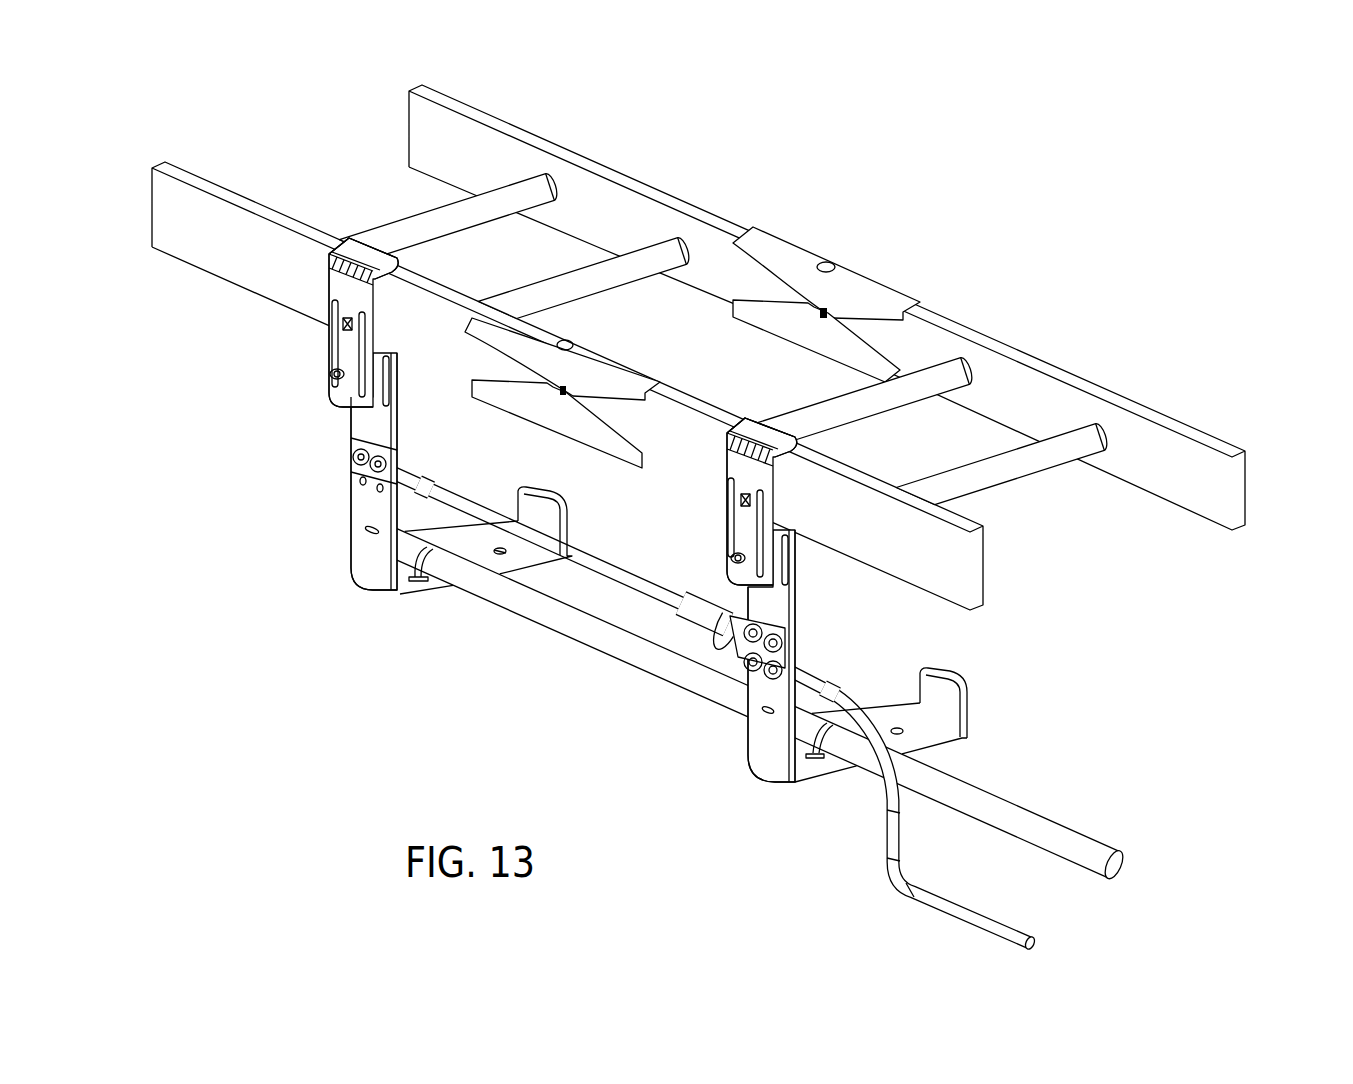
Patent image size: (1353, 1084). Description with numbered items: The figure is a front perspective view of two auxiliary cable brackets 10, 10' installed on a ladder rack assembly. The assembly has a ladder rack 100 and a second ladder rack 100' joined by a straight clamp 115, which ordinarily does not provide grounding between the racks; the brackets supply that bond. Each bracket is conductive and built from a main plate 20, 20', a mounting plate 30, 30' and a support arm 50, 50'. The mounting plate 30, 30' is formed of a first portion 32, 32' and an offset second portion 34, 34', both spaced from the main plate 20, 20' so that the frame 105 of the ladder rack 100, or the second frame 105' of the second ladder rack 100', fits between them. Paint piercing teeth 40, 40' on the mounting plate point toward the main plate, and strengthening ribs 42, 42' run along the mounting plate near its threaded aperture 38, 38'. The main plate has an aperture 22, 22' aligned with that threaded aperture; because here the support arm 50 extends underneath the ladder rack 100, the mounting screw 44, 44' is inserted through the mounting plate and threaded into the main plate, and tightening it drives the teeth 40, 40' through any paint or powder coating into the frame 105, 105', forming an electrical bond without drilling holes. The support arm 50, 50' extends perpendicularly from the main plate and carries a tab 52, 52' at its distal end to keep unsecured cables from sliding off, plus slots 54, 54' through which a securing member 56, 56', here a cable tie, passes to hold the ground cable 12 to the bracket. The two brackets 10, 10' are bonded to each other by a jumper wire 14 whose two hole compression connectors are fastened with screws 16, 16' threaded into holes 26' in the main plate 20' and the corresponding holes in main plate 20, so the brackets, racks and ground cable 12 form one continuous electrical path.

The second frame 105' is at (442, 217).
The frame 105 is at (940, 434).
The second ladder rack 100' is at (528, 205).
The ladder rack 100 is at (977, 388).
The straight clamp 115 is at (860, 270).
The second auxiliary cable bracket 10' is at (429, 414).
The auxiliary cable bracket 10 is at (832, 600).
The first portion 32' is at (326, 216).
The first portion 32 is at (772, 409).
The second portion 34' is at (247, 278).
The second portion 34 is at (741, 405).
The mounting plate 30' is at (411, 320).
The mounting plate 30 is at (817, 501).
The threaded aperture 38' is at (284, 423).
The threaded aperture 38 is at (710, 565).
The teeth 40' is at (250, 331).
The paint piercing teeth 40 is at (700, 469).
The strengthening ribs 42' is at (362, 315).
The strengthening ribs 42 is at (808, 498).
The mounting screw 44' is at (246, 396).
The mounting screw 44 is at (692, 539).
The main plate 20' is at (432, 471).
The main plate 20 is at (820, 656).
The aperture 22' is at (426, 471).
The aperture 22 is at (832, 656).
The holes 26' is at (289, 530).
The cable clamp 16' is at (286, 472).
The screws 16 is at (689, 691).
The support arm 50' is at (486, 598).
The support arm 50 is at (927, 746).
The tab 52' is at (558, 504).
The tab 52 is at (979, 687).
The slots 54' is at (429, 560).
The slots 54 is at (848, 744).
The securing member 56' is at (436, 611).
The securing member 56 is at (822, 792).
The jumper wire 14 is at (640, 592).
The ground cable 12 is at (1085, 830).